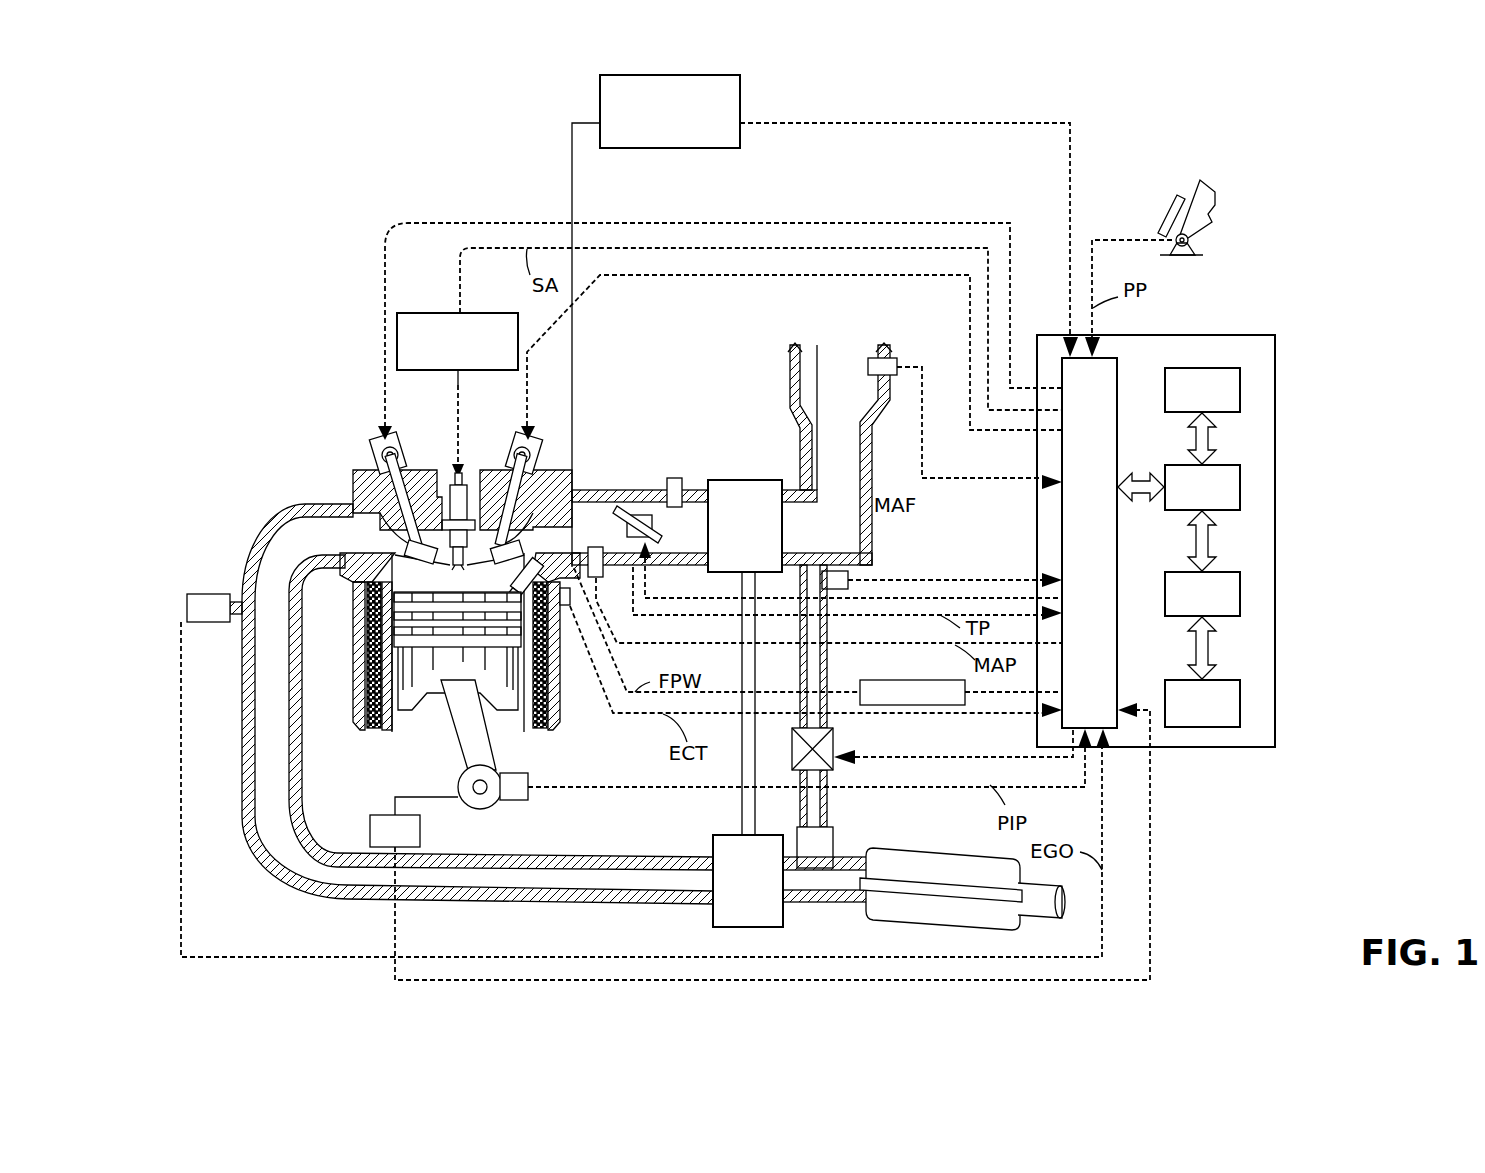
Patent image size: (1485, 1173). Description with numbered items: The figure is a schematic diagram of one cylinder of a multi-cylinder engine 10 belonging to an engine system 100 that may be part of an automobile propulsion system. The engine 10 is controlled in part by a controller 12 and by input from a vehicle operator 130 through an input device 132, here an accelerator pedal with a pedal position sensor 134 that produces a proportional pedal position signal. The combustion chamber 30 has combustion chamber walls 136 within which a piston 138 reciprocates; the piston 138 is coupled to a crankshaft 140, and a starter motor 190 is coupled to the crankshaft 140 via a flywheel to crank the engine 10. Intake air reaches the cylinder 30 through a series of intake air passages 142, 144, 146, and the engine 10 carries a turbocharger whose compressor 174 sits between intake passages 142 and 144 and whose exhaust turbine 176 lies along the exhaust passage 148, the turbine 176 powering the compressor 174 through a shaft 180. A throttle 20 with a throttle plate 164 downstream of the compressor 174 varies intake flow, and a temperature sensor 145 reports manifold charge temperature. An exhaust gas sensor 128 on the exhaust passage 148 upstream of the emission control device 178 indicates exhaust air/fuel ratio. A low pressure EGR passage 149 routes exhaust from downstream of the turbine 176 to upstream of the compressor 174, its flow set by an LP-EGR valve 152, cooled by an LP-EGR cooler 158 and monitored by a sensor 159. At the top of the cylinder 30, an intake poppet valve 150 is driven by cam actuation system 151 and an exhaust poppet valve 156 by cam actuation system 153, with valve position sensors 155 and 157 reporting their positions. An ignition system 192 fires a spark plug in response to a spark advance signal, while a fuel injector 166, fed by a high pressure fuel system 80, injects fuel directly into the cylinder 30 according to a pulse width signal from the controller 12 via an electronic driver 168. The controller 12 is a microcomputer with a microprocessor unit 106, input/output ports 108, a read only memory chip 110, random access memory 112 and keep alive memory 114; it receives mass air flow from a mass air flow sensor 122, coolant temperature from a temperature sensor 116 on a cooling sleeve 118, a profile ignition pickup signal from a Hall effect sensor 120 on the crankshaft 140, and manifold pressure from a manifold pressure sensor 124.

The engine 10 is at (172, 152).
The engine system 100 is at (1362, 108).
The controller 12 is at (1268, 335).
The throttle 20 is at (640, 509).
The combustion chamber 30 is at (455, 577).
The fuel system 80 is at (742, 90).
The microprocessor unit 106 is at (1242, 487).
The input/output ports 108 is at (1120, 365).
The read only memory chip 110 is at (1242, 390).
The random access memory 112 is at (1242, 594).
The keep alive memory 114 is at (1242, 702).
The temperature sensor 116 is at (577, 677).
The cooling sleeve 118 is at (566, 720).
The Hall effect sensor 120 is at (529, 800).
The mass air flow sensor 122 is at (897, 358).
The manifold pressure sensor 124 is at (605, 580).
The exhaust gas sensor 128 is at (187, 602).
The vehicle operator 130 is at (1210, 200).
The input device 132 is at (1162, 212).
The pedal position sensor 134 is at (1190, 242).
The combustion chamber walls 136 is at (393, 730).
The piston 138 is at (440, 685).
The crankshaft 140 is at (490, 806).
The intake air passage 142 is at (855, 397).
The intake manifold 144 is at (673, 538).
The temperature sensor 145 is at (677, 478).
The intake air passage 146 is at (575, 538).
The exhaust passage 148 is at (308, 545).
The LP-EGR passage 149 is at (828, 820).
The intake poppet valve 150 is at (482, 505).
The cam actuation system 151 is at (518, 443).
The LP-EGR valve 152 is at (793, 752).
The cam actuation system 153 is at (392, 443).
The valve position sensor 155 is at (558, 452).
The exhaust poppet valve 156 is at (372, 490).
The valve position sensor 157 is at (378, 450).
The LP-EGR cooler 158 is at (833, 853).
The sensor 159 is at (825, 571).
The throttle plate 164 is at (616, 511).
The fuel injector 166 is at (531, 564).
The electronic driver 168 is at (880, 680).
The compressor 174 is at (732, 480).
The exhaust turbine 176 is at (713, 918).
The emission control device 178 is at (910, 848).
The shaft 180 is at (741, 806).
The starter motor 190 is at (382, 843).
The ignition system 192 is at (407, 313).